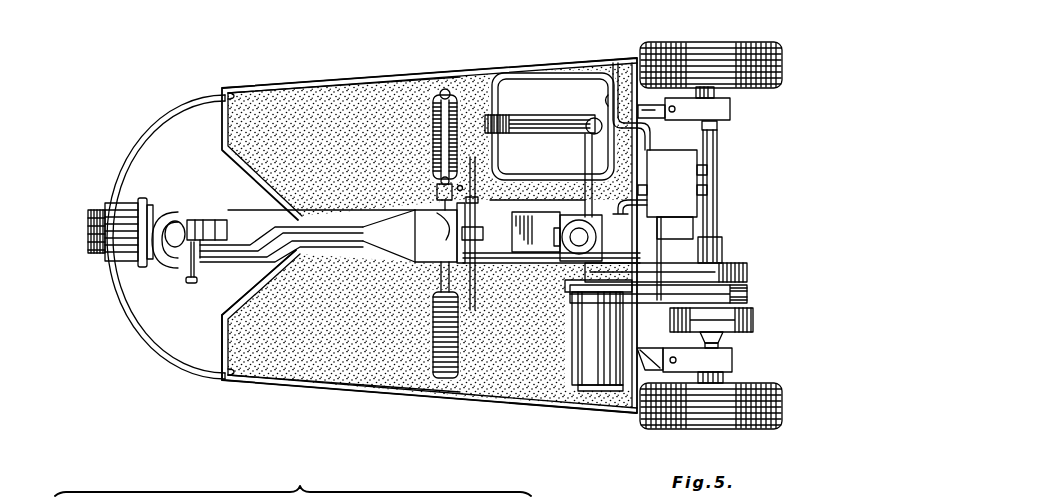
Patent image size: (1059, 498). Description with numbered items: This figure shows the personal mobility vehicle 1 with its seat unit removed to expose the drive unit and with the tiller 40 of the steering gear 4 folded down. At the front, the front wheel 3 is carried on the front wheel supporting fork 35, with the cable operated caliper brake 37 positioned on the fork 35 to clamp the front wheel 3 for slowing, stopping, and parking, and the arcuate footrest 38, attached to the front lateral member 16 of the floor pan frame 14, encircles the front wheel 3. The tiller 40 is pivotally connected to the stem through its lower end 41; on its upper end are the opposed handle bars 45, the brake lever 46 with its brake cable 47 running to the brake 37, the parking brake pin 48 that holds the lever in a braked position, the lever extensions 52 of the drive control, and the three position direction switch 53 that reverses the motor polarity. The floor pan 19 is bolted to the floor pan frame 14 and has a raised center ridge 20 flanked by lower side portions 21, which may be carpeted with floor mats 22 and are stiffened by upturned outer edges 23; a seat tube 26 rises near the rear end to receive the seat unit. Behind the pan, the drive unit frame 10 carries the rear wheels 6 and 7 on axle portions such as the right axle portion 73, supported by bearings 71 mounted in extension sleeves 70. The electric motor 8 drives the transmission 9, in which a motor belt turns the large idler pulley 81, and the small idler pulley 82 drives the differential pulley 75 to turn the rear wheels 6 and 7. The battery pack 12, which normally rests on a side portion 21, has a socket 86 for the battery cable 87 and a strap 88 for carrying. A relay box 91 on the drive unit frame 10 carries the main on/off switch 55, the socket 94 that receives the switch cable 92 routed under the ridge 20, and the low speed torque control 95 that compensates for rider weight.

The personal mobility vehicle 1 is at (346, 81).
The front wheel 3 is at (86, 254).
The steering gear 4 is at (333, 223).
The rear wheel 6 is at (785, 401).
The rear wheel 7 is at (782, 47).
The electric motor 8 is at (575, 355).
The transmission 9 is at (745, 294).
The drive unit frame 10 is at (513, 212).
The battery pack 12 is at (505, 72).
The floor pan frame 14 is at (222, 318).
The front lateral member 16 is at (222, 331).
The floor pan 19 is at (390, 378).
The raised center ridge 20 is at (502, 252).
The side portion 21 is at (326, 374).
The floor mat 22 is at (292, 92).
The outer edge 23 is at (378, 65).
The seat tube 26 is at (558, 251).
The front wheel supporting fork 35 is at (171, 273).
The caliper brake 37 is at (147, 202).
The arcuate footrest 38 is at (138, 323).
The tiller 40 is at (326, 244).
The lower end of the tiller 41 is at (208, 220).
The handle bars 45 is at (433, 118).
The brake lever 46 is at (437, 150).
The brake cable 47 is at (440, 247).
The parking brake pin 48 is at (437, 184).
The lever extensions 52 is at (477, 168).
The direction switch 53 is at (511, 267).
The main on/off switch 55 is at (710, 170).
The extension sleeve 70 is at (733, 365).
The bearing 71 is at (720, 127).
The right axle portion 73 is at (720, 220).
The differential pulley 75 is at (718, 329).
The large idler pulley 81 is at (747, 268).
The small idler pulley 82 is at (752, 316).
The socket 86 is at (605, 90).
The battery cable 87 is at (684, 111).
The strap 88 is at (512, 117).
The relay box 91 is at (698, 218).
The switch cable 92 is at (644, 206).
The socket 94 is at (645, 186).
The low speed torque control 95 is at (710, 190).